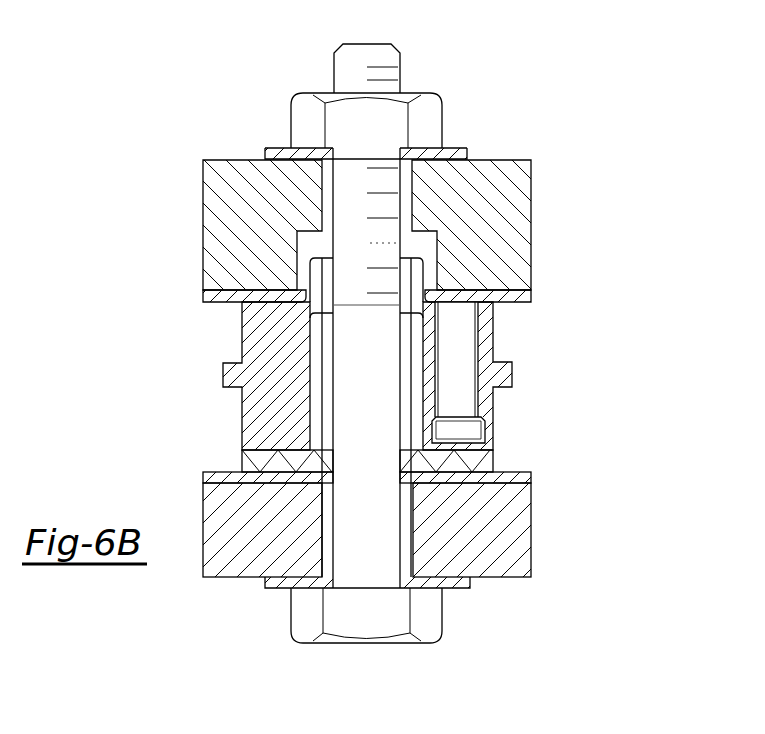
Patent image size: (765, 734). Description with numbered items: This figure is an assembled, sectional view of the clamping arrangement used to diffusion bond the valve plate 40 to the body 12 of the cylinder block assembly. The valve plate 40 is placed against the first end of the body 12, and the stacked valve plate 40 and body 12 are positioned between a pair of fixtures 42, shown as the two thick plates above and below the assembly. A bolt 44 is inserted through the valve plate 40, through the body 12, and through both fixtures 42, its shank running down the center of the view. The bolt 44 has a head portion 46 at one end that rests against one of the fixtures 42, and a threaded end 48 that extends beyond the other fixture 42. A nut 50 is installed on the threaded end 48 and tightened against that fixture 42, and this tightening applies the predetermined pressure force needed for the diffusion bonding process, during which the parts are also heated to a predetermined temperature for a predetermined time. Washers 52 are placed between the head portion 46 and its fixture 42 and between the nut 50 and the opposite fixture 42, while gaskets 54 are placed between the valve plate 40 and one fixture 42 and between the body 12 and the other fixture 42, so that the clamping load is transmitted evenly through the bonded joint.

The body 12 is at (250, 423).
The valve plate 40 is at (475, 463).
The fixtures 42 is at (513, 203).
The bolt 44 is at (387, 356).
The head portion 46 is at (430, 627).
The threaded end 48 is at (392, 50).
The nut 50 is at (435, 118).
The washers 52 is at (282, 152).
The gaskets 54 is at (227, 294).